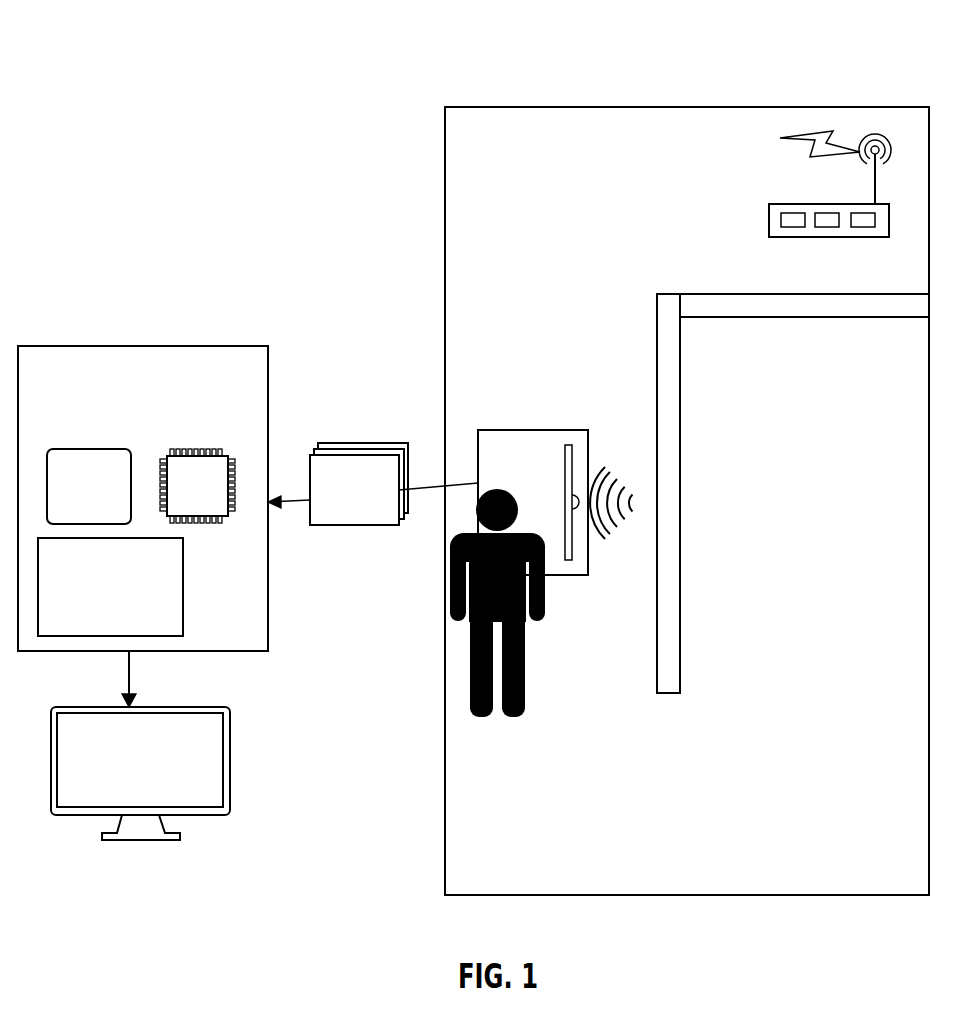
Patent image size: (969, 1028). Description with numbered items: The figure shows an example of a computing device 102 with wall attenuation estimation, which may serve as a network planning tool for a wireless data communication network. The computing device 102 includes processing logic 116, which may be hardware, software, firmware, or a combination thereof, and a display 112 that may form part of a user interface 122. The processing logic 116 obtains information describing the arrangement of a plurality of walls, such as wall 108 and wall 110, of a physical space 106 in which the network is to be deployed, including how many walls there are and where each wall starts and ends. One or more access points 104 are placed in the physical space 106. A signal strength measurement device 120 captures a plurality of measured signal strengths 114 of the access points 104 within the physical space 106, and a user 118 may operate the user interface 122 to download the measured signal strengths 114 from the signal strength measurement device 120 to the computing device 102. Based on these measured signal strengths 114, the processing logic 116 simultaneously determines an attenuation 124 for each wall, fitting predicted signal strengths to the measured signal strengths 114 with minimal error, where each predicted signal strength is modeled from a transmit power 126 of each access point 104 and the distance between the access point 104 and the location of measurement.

The computing device 102 is at (158, 422).
The access point 104 is at (848, 278).
The physical space 106 is at (782, 856).
The wall 108 is at (680, 612).
The wall 110 is at (792, 318).
The display 112 is at (198, 776).
The measured signal strengths 114 is at (372, 504).
The processing logic 116 is at (214, 498).
The user 118 is at (542, 758).
The signal strength measurement device 120 is at (550, 466).
The user interface 122 is at (168, 502).
The attenuation 124 is at (127, 618).
The transmit power 126 is at (834, 131).